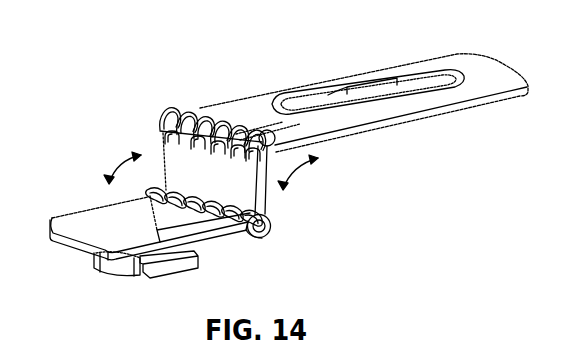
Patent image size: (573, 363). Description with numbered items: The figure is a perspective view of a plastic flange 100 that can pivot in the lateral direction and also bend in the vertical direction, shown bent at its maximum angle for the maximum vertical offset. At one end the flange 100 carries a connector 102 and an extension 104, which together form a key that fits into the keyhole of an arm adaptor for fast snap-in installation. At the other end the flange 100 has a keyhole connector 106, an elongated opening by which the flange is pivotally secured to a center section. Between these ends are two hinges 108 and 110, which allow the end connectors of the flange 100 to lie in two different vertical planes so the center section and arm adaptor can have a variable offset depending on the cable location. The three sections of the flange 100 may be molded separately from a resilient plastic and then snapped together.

The plastic flange 100 is at (289, 173).
The connector 102 is at (112, 267).
The extension 104 is at (180, 270).
The keyhole connector 106 is at (302, 113).
The hinge 108 is at (282, 221).
The hinge 110 is at (155, 110).